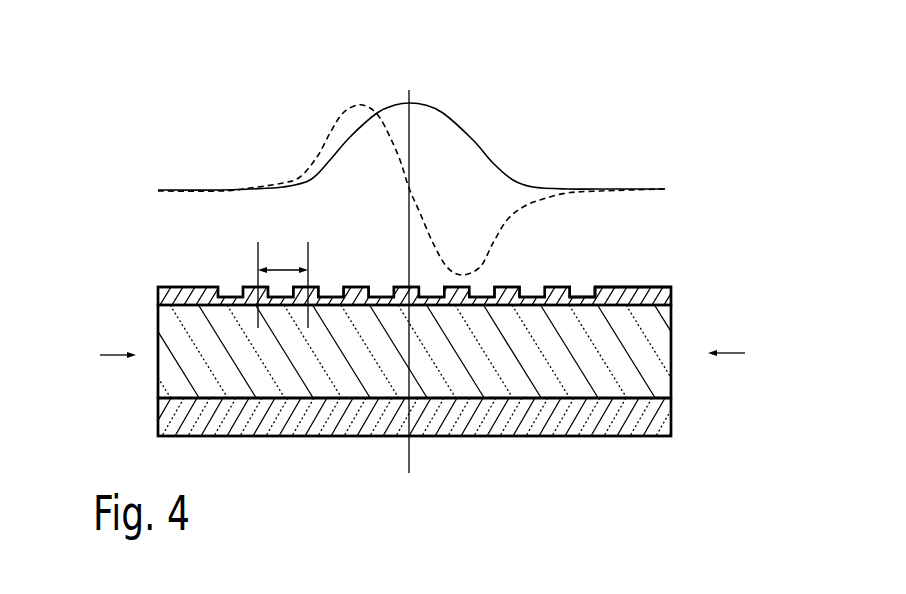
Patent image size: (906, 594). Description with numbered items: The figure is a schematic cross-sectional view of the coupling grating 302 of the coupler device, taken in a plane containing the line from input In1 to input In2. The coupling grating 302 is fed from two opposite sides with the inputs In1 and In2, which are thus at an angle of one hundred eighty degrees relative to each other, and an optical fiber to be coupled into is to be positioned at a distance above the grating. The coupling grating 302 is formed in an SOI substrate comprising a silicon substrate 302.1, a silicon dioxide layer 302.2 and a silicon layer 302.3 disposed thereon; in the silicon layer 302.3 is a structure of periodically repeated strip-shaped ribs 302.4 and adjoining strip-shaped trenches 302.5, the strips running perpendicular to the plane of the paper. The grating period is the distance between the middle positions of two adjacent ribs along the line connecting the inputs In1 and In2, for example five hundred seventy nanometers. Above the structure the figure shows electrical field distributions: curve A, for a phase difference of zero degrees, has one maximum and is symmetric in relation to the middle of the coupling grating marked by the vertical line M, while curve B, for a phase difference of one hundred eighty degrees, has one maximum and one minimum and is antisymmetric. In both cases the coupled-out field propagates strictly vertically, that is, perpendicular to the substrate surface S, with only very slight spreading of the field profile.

The coupling grating 302 is at (151, 251).
The silicon substrate 302.1 is at (673, 412).
The silicon dioxide layer 302.2 is at (673, 319).
The silicon layer 302.3 is at (673, 286).
The strip-shaped ribs 302.4 is at (582, 295).
The strip-shaped trenches 302.5 is at (594, 284).
The substrate surface S is at (190, 398).
The vertical line through the middle of the coupling grating M is at (410, 461).
The curve A is at (455, 122).
The curve B is at (322, 150).
The input In1 is at (102, 356).
The input In2 is at (743, 356).